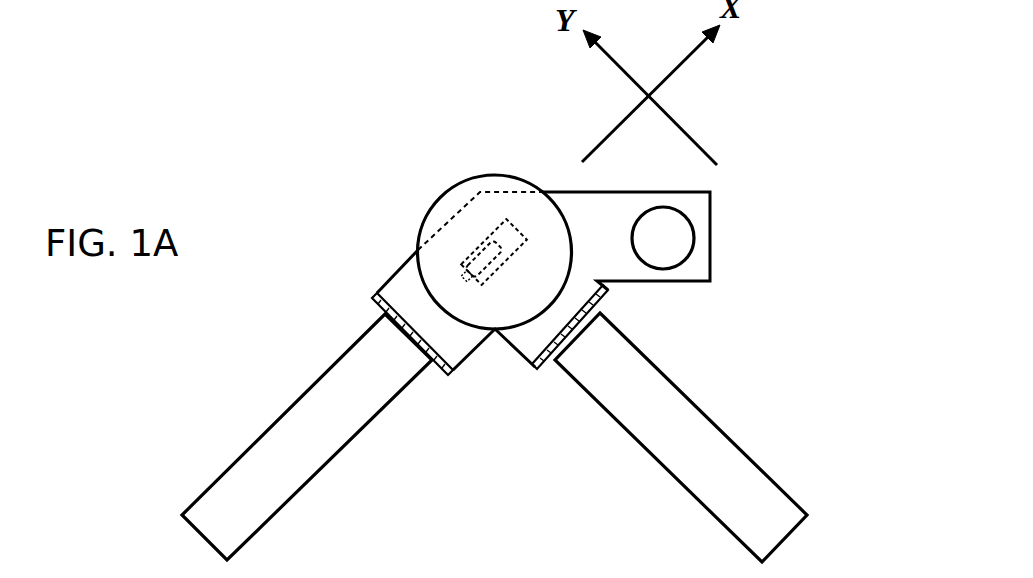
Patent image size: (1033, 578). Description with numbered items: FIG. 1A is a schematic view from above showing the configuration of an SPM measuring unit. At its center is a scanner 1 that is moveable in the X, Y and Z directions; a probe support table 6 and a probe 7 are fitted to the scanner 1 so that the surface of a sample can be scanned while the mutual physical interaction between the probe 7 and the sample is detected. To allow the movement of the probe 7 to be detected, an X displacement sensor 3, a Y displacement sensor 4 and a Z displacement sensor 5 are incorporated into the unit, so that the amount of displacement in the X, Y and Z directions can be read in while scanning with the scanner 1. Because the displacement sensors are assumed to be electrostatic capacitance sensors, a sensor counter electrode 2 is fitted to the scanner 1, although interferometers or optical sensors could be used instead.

The scanner 1 is at (432, 225).
The sensor counter electrode 2 is at (400, 282).
The X displacement sensor 3 is at (317, 397).
The Y displacement sensor 4 is at (668, 403).
The Z displacement sensor 5 is at (675, 238).
The probe support table 6 is at (507, 233).
The probe 7 is at (480, 257).